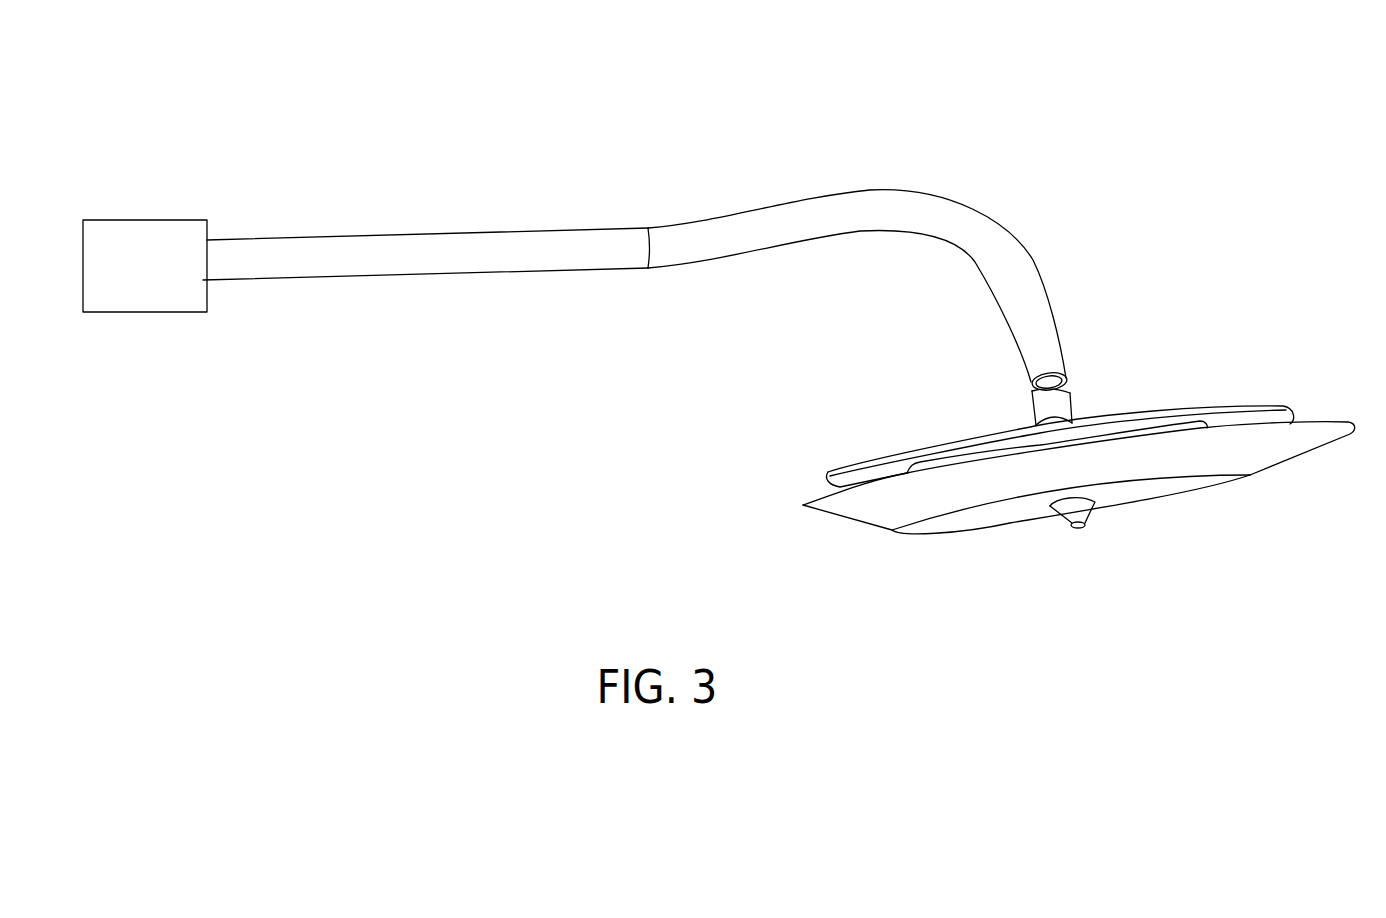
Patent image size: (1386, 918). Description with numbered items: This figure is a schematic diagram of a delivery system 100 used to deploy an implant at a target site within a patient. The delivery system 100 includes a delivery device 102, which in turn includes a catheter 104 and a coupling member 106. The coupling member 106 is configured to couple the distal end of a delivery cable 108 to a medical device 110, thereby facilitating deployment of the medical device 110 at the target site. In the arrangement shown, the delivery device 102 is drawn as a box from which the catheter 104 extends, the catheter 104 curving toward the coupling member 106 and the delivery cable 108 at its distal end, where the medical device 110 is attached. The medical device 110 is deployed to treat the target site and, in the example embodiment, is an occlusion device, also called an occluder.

The delivery system 100 is at (909, 139).
The delivery device 102 is at (149, 313).
The catheter 104 is at (688, 232).
The coupling member 106 is at (1062, 408).
The delivery cable 108 is at (1032, 384).
The medical device 110 is at (1150, 505).